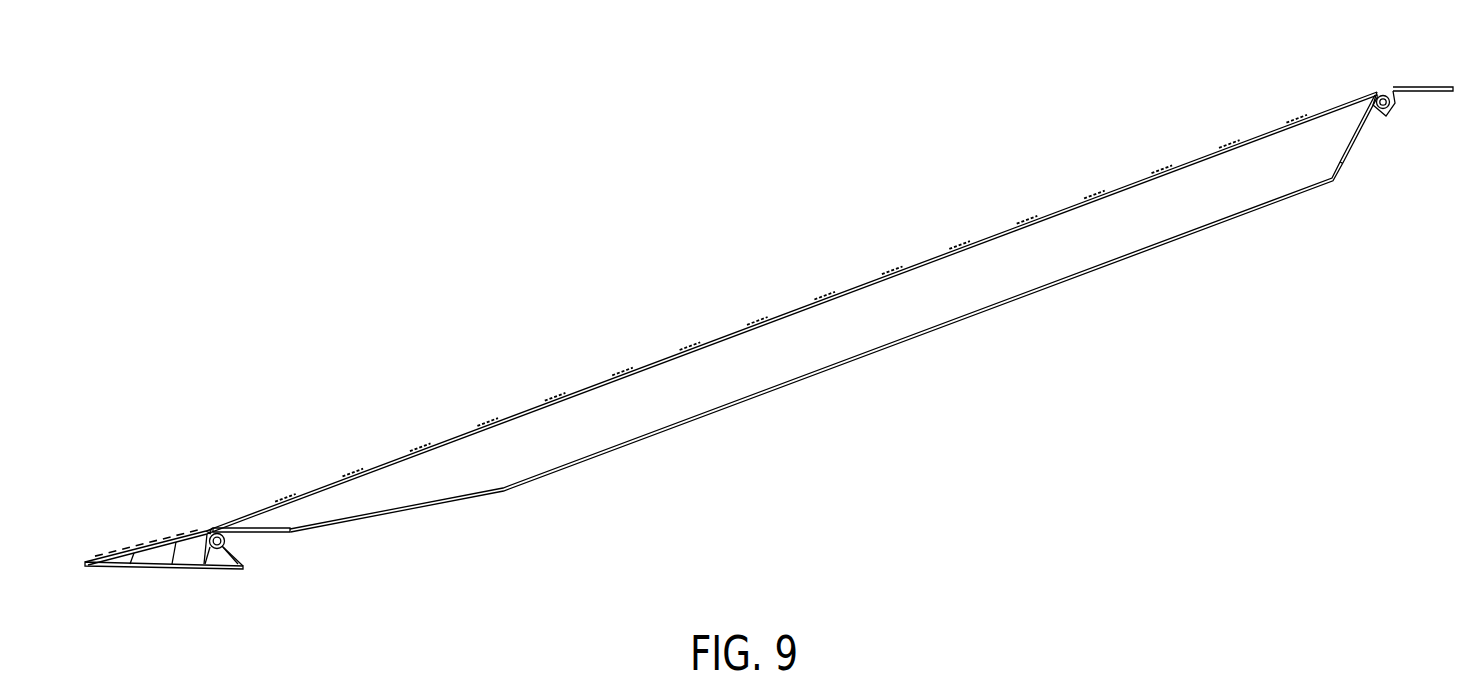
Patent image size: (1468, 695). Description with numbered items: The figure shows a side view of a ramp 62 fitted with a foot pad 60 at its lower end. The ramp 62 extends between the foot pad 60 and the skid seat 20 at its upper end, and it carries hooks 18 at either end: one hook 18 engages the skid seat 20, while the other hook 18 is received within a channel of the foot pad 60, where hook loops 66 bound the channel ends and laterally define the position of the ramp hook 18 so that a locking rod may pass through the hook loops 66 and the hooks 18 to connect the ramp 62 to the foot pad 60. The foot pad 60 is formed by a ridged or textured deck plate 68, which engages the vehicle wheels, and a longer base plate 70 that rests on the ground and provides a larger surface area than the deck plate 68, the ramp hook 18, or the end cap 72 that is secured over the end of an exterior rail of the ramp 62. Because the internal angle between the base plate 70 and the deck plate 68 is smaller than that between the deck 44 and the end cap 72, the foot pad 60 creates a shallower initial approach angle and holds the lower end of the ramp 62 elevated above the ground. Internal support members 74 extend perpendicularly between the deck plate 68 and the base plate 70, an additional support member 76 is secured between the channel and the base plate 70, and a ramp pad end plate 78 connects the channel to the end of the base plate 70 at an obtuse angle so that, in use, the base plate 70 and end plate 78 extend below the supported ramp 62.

The hook 18 is at (1390, 94).
The skid seat 20 is at (1426, 86).
The deck 44 is at (688, 347).
The foot pad 60 is at (197, 547).
The ramp 62 is at (1080, 232).
The hook loop 66 is at (213, 531).
The deck plate 68 is at (152, 543).
The base plate 70 is at (187, 566).
The end cap 72 is at (253, 538).
The internal support member 74 is at (130, 566).
The additional support member 76 is at (214, 554).
The ramp pad end plate 78 is at (240, 556).